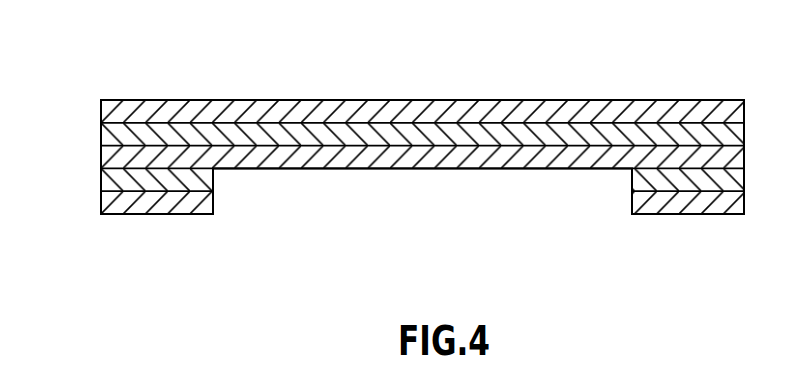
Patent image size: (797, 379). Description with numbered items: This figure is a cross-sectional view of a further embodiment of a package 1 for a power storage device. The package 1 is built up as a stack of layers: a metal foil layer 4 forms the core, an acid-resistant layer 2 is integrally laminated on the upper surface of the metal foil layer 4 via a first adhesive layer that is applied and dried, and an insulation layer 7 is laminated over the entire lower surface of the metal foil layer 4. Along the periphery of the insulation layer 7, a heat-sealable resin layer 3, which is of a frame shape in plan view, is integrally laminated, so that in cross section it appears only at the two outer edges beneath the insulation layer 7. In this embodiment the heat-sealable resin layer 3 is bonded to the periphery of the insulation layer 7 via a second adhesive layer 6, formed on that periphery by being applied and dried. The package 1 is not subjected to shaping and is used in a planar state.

The package for a power storage device 1 is at (702, 72).
The acid-resistant layer 2 is at (118, 111).
The metal foil layer 4 is at (122, 134).
The insulation layer 7 is at (118, 156).
The second adhesive layer 6 is at (125, 179).
The heat-sealable resin layer 3 is at (122, 201).